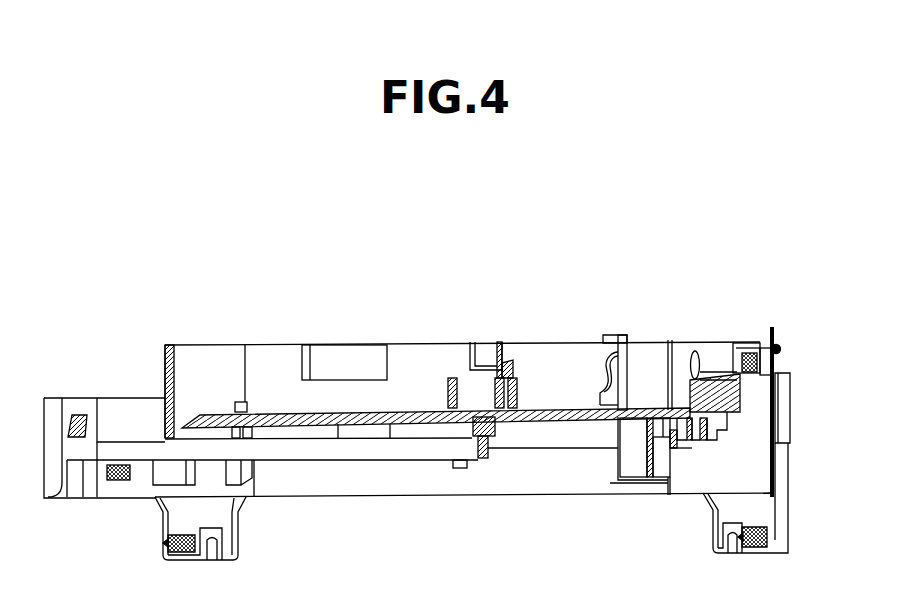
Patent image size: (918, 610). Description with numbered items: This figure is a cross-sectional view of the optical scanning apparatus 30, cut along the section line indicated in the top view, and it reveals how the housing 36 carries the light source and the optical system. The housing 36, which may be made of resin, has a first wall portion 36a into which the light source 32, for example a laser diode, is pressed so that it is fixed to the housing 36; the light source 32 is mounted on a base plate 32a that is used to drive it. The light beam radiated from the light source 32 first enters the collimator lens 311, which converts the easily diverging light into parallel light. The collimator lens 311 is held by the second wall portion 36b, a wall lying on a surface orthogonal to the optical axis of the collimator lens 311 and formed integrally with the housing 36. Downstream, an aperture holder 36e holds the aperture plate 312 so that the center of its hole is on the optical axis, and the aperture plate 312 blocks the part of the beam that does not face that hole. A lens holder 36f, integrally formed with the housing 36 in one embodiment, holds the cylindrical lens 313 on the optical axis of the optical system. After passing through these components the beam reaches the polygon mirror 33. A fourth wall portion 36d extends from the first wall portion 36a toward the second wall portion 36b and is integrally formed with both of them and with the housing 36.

The optical scanning apparatus 30 is at (363, 508).
The light source 32 is at (727, 350).
The base plate 32a is at (778, 327).
The polygon mirror 33 is at (345, 358).
The housing 36 is at (538, 416).
The first wall portion 36a is at (752, 343).
The second wall portion 36b is at (676, 393).
The fourth wall portion 36d is at (720, 400).
The aperture holder 36e is at (622, 335).
The lens holder 36f is at (493, 382).
The collimator lens 311 is at (697, 351).
The aperture plate 312 is at (596, 372).
The cylindrical lens 313 is at (504, 360).